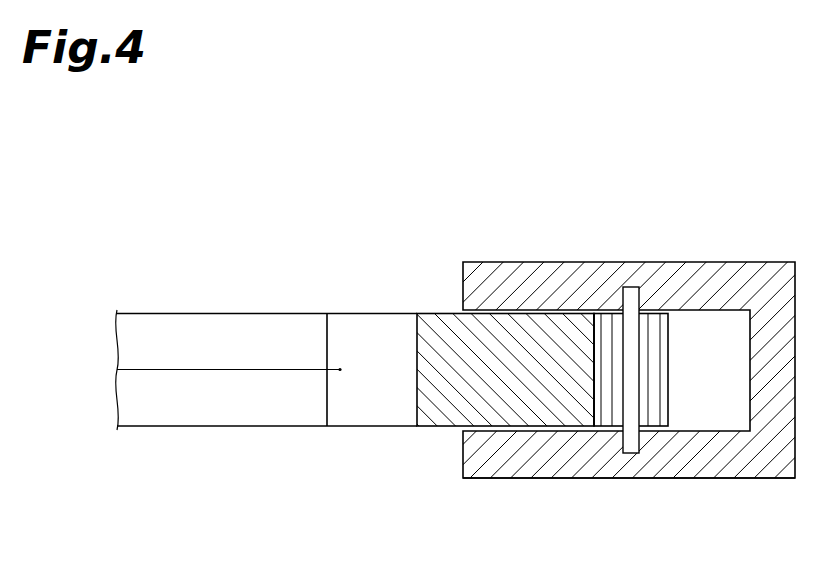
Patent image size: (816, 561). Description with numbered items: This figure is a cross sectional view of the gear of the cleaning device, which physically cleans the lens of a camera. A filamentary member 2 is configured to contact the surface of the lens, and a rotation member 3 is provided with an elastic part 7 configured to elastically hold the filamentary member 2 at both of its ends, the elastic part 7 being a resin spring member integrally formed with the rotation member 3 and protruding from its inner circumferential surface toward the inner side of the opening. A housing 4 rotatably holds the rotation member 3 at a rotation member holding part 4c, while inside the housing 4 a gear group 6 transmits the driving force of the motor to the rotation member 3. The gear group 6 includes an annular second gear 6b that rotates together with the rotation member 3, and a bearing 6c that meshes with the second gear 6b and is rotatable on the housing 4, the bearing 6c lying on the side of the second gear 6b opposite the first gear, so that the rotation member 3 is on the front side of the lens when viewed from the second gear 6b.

The filamentary member 2 is at (209, 369).
The rotation member 3 is at (210, 410).
The housing 4 is at (748, 259).
The rotation member holding part 4c is at (558, 460).
The gear group 6 is at (516, 316).
The second gear 6b is at (570, 333).
The bearing 6c is at (655, 346).
The elastic part 7 is at (375, 410).